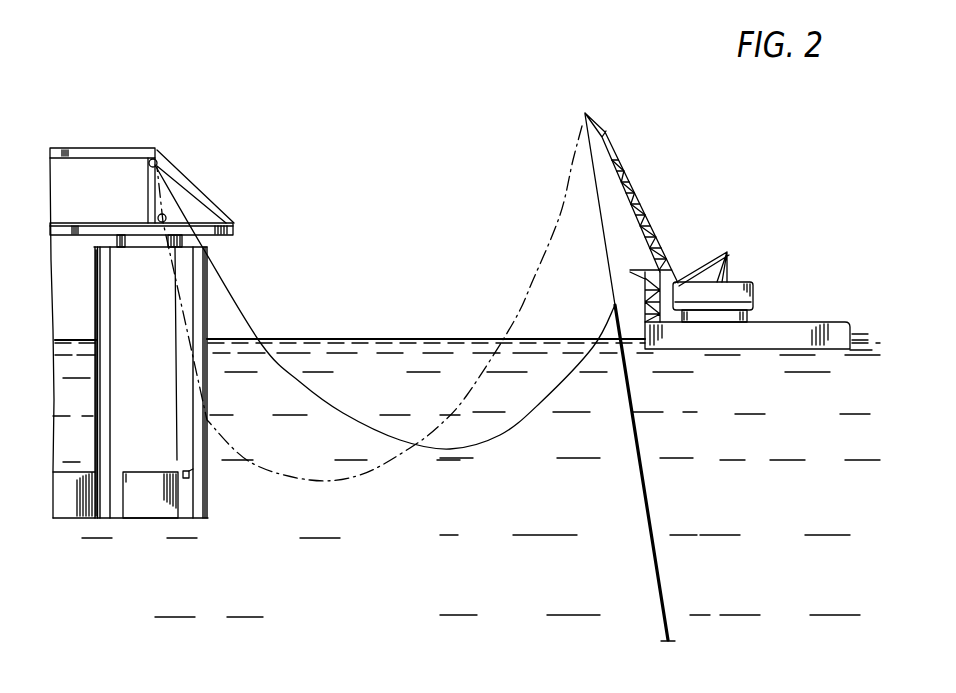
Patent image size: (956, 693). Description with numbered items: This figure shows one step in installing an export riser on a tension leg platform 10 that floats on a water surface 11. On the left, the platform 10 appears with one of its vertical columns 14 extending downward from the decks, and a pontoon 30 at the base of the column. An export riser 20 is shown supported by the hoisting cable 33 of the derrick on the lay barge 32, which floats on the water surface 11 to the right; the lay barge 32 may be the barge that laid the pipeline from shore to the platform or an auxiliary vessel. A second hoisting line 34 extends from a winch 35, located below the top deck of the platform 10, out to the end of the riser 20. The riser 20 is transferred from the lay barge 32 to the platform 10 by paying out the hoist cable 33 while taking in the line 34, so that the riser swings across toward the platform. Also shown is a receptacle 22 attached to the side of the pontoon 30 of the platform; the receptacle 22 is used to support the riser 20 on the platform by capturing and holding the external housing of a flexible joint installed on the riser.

The tension leg platform 10 is at (247, 273).
The water surface 11 is at (366, 338).
The vertical column 14 is at (100, 408).
The export riser 20 is at (652, 502).
The receptacle 22 is at (189, 477).
The pontoon 30 is at (147, 514).
The lay barge 32 is at (768, 294).
The hoisting cable 33 is at (598, 217).
The second hoisting line 34 is at (343, 409).
The winch 35 is at (157, 157).